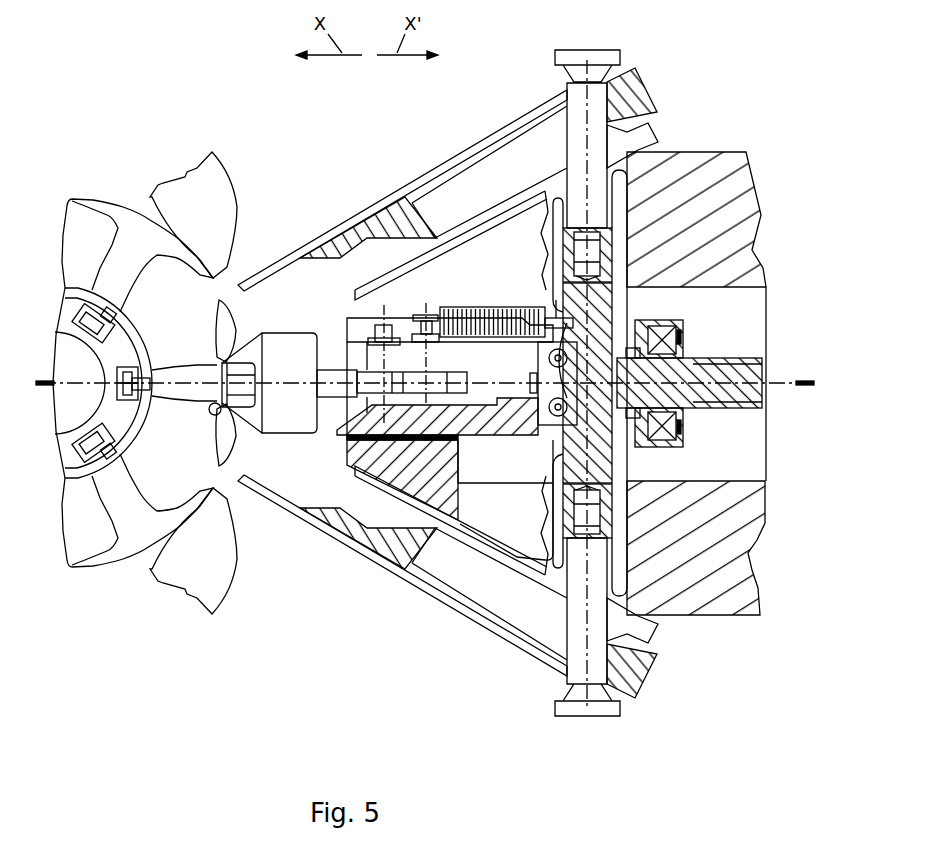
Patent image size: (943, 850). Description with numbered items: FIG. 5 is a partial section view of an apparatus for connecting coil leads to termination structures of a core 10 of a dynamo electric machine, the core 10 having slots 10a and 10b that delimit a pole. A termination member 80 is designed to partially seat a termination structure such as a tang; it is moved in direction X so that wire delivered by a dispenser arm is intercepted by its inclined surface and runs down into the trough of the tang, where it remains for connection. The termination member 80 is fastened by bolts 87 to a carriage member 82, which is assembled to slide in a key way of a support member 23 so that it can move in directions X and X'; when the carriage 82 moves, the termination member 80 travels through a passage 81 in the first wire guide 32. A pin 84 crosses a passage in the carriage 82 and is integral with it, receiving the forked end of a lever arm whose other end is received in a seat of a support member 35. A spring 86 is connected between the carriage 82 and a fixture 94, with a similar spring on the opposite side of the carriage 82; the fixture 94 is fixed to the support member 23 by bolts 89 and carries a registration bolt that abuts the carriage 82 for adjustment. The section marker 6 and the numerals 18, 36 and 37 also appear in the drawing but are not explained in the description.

The section line VI-VI 6 is at (805, 392).
The core 10 is at (92, 676).
The slot 10a is at (143, 343).
The slot 10b is at (143, 431).
The drive shaft 18 is at (736, 405).
The support member 23 is at (706, 168).
The first wire guide 32 is at (288, 340).
The support member 35 is at (548, 410).
The upper clamping arm 36 is at (278, 257).
The lower clamping arm 37 is at (266, 505).
The termination member 80 is at (247, 376).
The passage 81 is at (242, 400).
The carriage member 82 is at (478, 393).
The pin 84 is at (422, 372).
The spring 86 is at (474, 307).
The bolts 87 is at (372, 333).
The bolts 89 is at (590, 336).
The fixture 94 is at (578, 415).